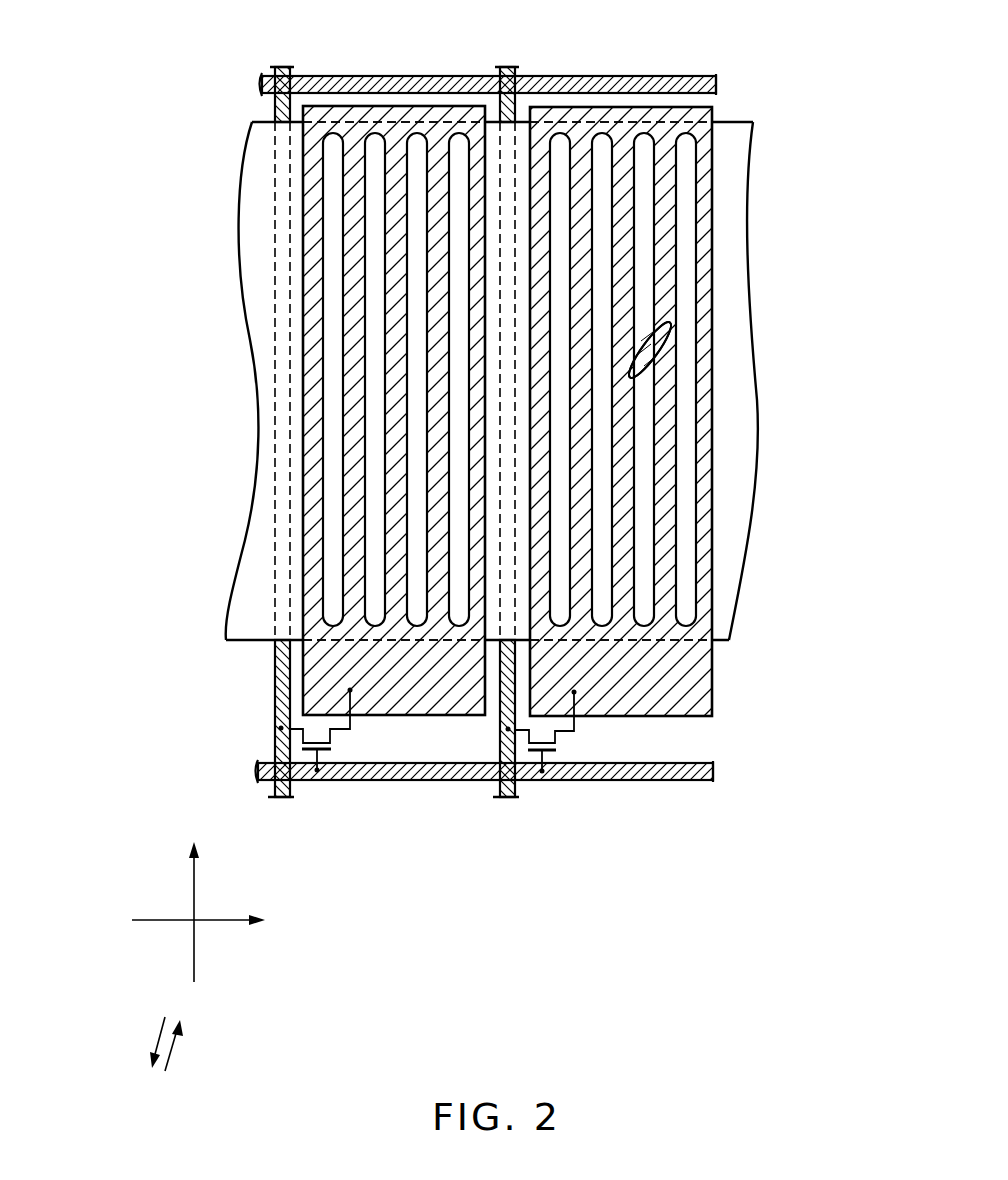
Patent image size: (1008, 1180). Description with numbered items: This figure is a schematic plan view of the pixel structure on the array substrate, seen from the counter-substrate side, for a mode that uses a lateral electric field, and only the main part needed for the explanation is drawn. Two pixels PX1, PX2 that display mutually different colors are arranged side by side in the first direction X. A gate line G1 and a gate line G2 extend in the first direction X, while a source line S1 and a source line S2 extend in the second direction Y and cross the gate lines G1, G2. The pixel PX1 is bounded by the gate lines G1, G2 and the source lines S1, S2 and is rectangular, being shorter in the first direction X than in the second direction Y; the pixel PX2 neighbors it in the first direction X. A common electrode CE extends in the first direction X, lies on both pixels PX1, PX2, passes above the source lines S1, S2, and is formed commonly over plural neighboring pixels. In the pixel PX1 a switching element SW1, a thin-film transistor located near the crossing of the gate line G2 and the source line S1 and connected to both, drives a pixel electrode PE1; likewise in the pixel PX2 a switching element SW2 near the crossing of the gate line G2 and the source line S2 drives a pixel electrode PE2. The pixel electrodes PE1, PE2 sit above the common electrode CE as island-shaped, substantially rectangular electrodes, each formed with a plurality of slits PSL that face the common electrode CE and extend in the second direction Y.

The common electrode CE is at (685, 581).
The gate line G1 is at (718, 85).
The gate line G2 is at (715, 772).
The source line S1 is at (283, 65).
The source line S2 is at (508, 65).
The pixel PX1 is at (349, 425).
The pixel PX2 is at (689, 426).
The pixel electrode PE1 is at (302, 676).
The pixel electrode PE2 is at (701, 411).
The switching element SW1 is at (341, 748).
The switching element SW2 is at (566, 748).
The slit PSL is at (695, 446).
The first direction X is at (209, 921).
The second direction Y is at (193, 893).